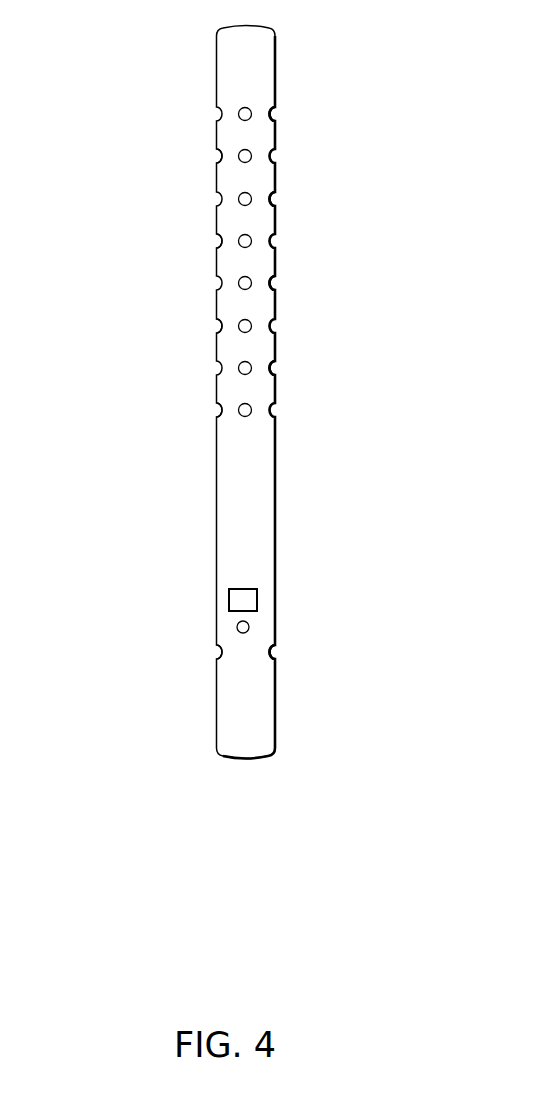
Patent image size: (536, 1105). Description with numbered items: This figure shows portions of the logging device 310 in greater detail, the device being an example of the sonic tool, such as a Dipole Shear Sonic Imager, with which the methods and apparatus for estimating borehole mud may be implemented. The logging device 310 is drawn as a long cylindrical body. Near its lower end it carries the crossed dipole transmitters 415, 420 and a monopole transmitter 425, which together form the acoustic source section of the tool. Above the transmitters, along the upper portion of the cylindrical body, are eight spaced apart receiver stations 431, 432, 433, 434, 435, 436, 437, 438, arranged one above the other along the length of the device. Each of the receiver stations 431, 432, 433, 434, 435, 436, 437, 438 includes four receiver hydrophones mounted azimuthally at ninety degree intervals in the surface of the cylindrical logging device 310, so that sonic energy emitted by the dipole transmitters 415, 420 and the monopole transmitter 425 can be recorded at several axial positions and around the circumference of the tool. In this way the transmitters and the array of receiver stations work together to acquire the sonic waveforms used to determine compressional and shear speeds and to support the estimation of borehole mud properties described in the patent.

The logging device 310 is at (185, 518).
The crossed dipole transmitter 415 is at (212, 649).
The crossed dipole transmitter 420 is at (250, 627).
The monopole transmitter 425 is at (257, 597).
The receiver station 431 is at (215, 409).
The receiver station 432 is at (279, 366).
The receiver station 433 is at (215, 324).
The receiver station 434 is at (279, 281).
The receiver station 435 is at (215, 240).
The receiver station 436 is at (278, 197).
The receiver station 437 is at (214, 155).
The receiver station 438 is at (278, 113).